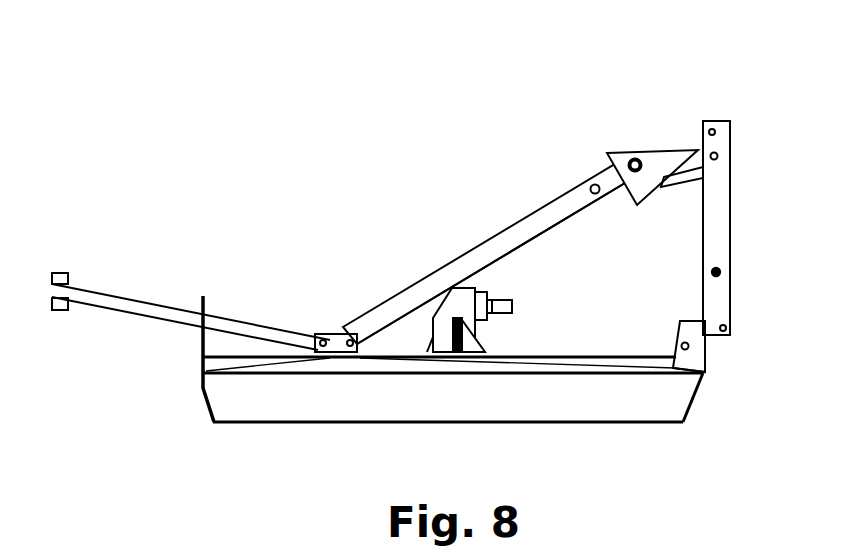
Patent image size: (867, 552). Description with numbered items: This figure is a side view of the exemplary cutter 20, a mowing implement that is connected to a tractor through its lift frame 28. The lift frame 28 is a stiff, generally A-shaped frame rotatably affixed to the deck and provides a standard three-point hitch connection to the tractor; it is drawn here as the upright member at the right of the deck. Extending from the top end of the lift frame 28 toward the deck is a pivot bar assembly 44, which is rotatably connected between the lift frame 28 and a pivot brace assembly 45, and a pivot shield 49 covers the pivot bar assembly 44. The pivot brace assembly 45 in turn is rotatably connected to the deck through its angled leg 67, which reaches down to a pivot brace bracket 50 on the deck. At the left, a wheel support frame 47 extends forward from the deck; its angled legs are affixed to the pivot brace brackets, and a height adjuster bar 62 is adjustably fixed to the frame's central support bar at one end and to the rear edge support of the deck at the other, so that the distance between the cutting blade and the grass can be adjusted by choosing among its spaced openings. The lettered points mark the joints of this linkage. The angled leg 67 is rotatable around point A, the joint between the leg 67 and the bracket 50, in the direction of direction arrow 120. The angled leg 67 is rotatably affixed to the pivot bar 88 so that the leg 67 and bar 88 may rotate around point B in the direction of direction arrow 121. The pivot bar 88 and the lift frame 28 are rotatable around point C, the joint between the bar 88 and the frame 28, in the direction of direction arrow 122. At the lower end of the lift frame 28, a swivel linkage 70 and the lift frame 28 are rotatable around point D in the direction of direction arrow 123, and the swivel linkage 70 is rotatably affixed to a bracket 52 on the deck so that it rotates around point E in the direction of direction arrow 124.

The cutter 20 is at (178, 162).
The lift frame 28 is at (720, 223).
The pivot bar assembly 44 is at (696, 151).
The pivot brace assembly 45 is at (520, 213).
The wheel support frame 47 is at (103, 298).
The pivot shield 49 is at (647, 190).
The pivot brace bracket 50 is at (317, 333).
The bracket 52 is at (705, 368).
The height adjuster bar 62 is at (203, 297).
The angled leg 67 is at (488, 262).
The swivel linkage 70 is at (705, 318).
The pivot bar 88 is at (687, 178).
The direction arrow 120 is at (362, 300).
The direction arrow 121 is at (600, 163).
The direction arrow 122 is at (726, 116).
The direction arrow 123 is at (712, 353).
The direction arrow 124 is at (681, 311).
The point A is at (368, 338).
The point B is at (597, 196).
The point C is at (718, 162).
The point D is at (724, 327).
The point E is at (707, 353).